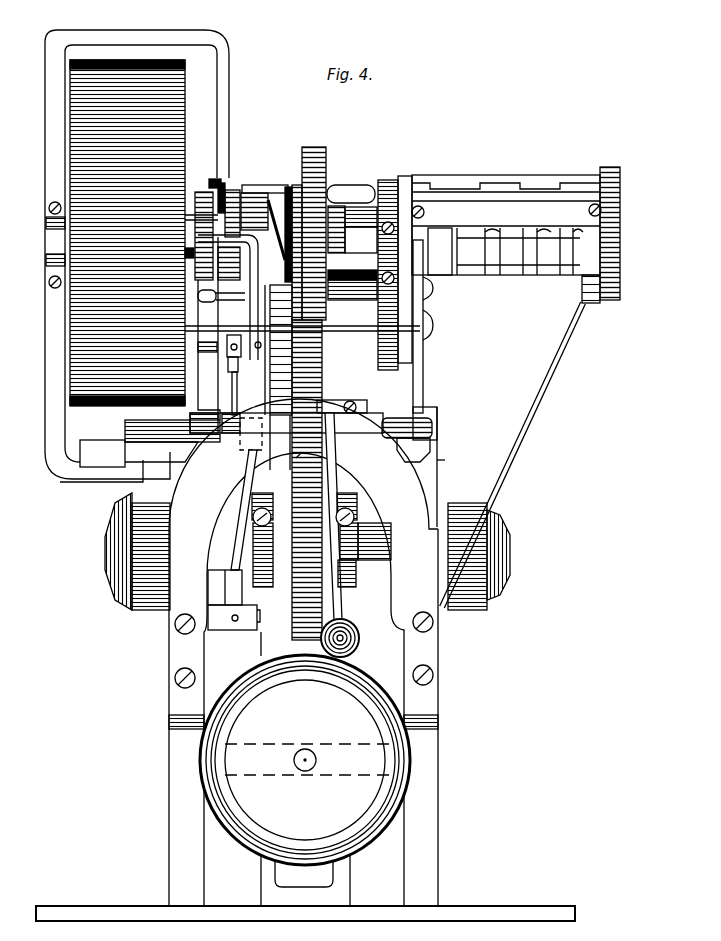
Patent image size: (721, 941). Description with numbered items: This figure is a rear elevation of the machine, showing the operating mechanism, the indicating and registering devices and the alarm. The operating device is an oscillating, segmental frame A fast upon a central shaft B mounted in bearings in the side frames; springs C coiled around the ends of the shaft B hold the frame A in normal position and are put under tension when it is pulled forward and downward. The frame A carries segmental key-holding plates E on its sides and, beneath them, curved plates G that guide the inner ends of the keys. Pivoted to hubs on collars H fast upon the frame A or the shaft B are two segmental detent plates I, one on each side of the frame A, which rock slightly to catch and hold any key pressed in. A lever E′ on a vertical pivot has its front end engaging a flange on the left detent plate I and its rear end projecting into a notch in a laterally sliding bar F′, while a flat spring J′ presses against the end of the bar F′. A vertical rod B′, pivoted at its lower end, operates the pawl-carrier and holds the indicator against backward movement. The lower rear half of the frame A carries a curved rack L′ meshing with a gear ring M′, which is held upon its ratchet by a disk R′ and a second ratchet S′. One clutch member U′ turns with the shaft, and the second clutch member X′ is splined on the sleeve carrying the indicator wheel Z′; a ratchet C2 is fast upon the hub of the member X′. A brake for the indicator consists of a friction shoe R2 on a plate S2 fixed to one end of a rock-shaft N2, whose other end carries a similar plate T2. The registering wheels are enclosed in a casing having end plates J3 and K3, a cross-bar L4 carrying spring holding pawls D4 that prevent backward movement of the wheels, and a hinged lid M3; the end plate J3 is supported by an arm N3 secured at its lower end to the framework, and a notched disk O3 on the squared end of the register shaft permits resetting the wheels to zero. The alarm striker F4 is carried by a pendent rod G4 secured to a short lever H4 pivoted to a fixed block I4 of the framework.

The oscillating frame A is at (305, 660).
The indicator wheel Z′ is at (80, 154).
The friction shoe R2 is at (100, 448).
The plate S2 is at (172, 443).
The ratchet C2 is at (200, 192).
The second ratchet S′ is at (223, 180).
The clutch member X′ is at (236, 192).
The clutch member U′ is at (256, 192).
The gear M′ is at (320, 157).
The disk R′ is at (331, 187).
The lever E′ is at (352, 241).
The curved plates G is at (370, 293).
The end plate K3 is at (422, 307).
The sliding bar F′ is at (416, 340).
The flat spring J′ is at (417, 375).
The striker lever H4 is at (311, 414).
The fixed block I4 is at (356, 393).
The curved rack L′ is at (308, 403).
The pendent rod G4 is at (331, 446).
The vertical rod B′ is at (243, 500).
The central shaft B is at (365, 605).
The collars H is at (282, 585).
The detent plates I is at (263, 477).
The striker F4 is at (359, 634).
The key-holding plates E is at (305, 760).
The springs C is at (143, 575).
The rock-shaft N2 is at (432, 435).
The plate T2 is at (451, 449).
The hinged lid M3 is at (470, 175).
The spring holding pawls D4 is at (473, 230).
The cross-bar L4 is at (534, 215).
The notched disk O3 is at (612, 218).
The end plate J3 is at (598, 265).
The arm N3 is at (560, 350).